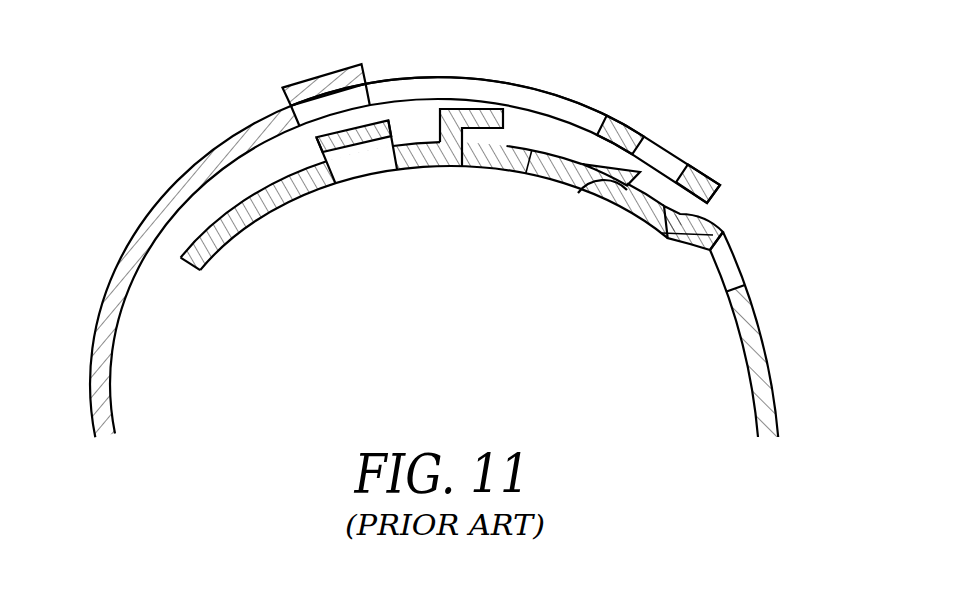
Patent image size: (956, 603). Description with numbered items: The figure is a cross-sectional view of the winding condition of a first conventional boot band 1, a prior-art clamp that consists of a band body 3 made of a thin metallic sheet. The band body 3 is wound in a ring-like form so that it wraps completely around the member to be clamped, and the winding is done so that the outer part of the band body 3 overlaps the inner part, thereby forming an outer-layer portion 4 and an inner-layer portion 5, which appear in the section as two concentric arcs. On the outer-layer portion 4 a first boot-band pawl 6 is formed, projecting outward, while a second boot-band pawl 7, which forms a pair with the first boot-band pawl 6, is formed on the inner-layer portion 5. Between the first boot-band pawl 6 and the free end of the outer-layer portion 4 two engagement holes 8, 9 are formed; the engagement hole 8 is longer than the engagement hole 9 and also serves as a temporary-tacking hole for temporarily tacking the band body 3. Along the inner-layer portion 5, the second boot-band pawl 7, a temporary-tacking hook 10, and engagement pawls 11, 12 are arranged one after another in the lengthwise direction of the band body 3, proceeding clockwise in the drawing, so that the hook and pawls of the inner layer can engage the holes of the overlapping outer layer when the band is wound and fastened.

The first conventional boot band 1 is at (648, 78).
The band body 3 is at (772, 363).
The outer-layer portion 4 is at (441, 88).
The inner-layer portion 5 is at (507, 170).
The first boot-band pawl 6 is at (341, 66).
The second boot-band pawl 7 is at (369, 148).
The engagement hole 8 is at (527, 100).
The engagement hole 9 is at (668, 152).
The temporary-tacking hook 10 is at (490, 118).
The engagement pawl 11 is at (610, 195).
The engagement pawl 12 is at (681, 242).